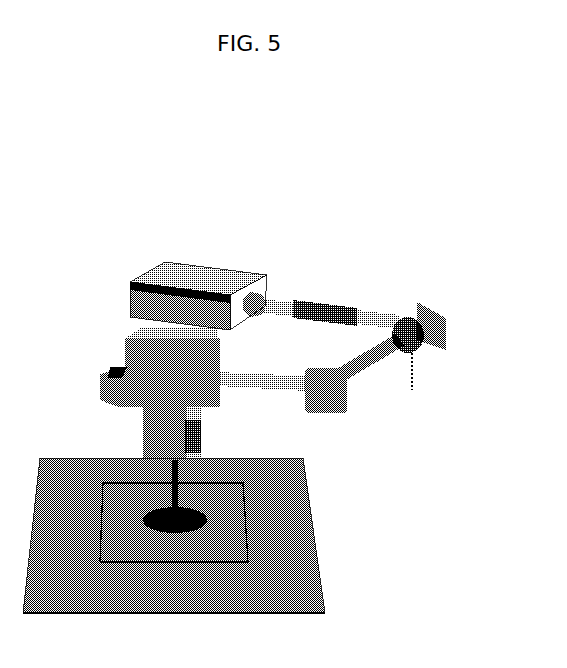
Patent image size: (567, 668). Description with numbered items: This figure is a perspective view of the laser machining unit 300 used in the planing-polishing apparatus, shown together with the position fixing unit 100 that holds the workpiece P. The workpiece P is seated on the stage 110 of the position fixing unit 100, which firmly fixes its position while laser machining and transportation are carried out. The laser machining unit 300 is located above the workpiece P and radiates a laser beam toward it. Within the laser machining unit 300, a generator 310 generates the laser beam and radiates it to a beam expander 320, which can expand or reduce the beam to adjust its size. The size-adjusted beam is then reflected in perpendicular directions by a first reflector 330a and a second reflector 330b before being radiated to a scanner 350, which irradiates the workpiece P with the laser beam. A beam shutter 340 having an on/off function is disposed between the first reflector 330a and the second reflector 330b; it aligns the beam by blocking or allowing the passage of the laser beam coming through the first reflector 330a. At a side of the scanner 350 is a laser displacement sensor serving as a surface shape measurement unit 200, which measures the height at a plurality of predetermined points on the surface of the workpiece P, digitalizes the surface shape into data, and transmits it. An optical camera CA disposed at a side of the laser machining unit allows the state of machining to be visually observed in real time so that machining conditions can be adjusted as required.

The position fixing unit 100 is at (322, 562).
The stage 110 is at (310, 587).
The workpiece P is at (243, 517).
The surface shape measurement unit 200 is at (94, 388).
The laser machining unit 300 is at (499, 558).
The generator 310 is at (196, 275).
The beam expander 320 is at (334, 300).
The first reflector 330a is at (442, 328).
The second reflector 330b is at (330, 407).
The beam shutter 340 is at (420, 351).
The scanner 350 is at (147, 333).
The optical camera CA is at (210, 441).